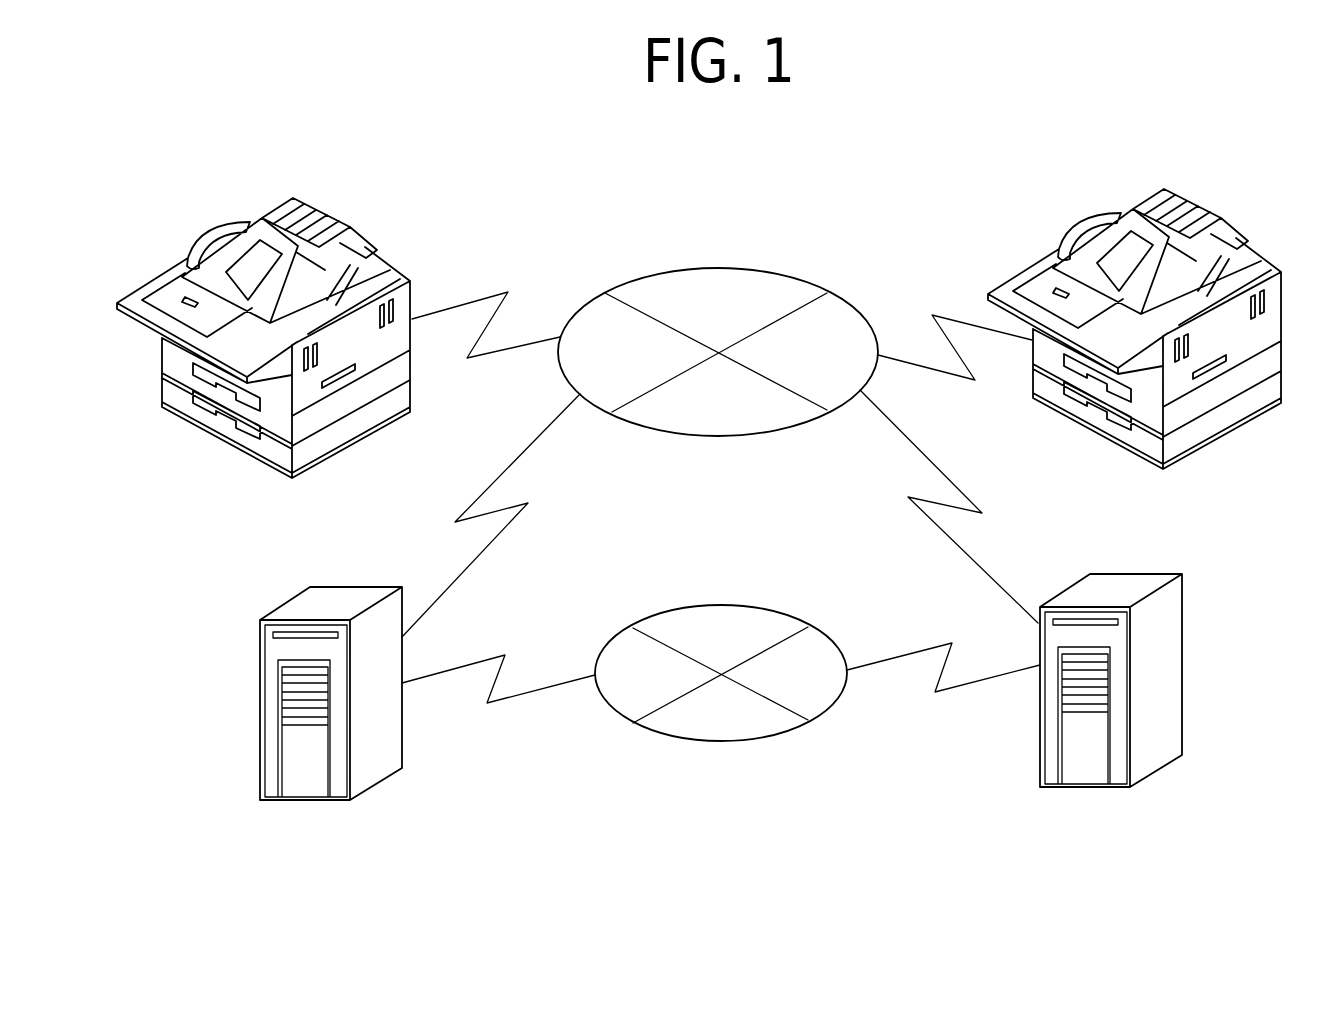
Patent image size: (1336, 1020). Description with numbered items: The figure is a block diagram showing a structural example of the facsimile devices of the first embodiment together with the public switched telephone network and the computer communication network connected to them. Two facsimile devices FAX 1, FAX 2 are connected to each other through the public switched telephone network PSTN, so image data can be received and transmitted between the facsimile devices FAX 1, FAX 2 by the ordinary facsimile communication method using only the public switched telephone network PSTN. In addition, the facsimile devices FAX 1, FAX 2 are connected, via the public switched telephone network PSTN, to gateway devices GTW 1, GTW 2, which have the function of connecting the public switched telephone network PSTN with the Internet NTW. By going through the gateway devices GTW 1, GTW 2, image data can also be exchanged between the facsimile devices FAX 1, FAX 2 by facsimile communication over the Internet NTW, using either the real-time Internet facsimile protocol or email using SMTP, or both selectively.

The facsimile device FAX 1 is at (263, 213).
The facsimile device FAX 2 is at (1140, 200).
The public switched telephone network PSTN is at (715, 267).
The Internet NTW is at (715, 605).
The gateway device GTW 1 is at (303, 802).
The gateway device GTW 2 is at (1106, 790).